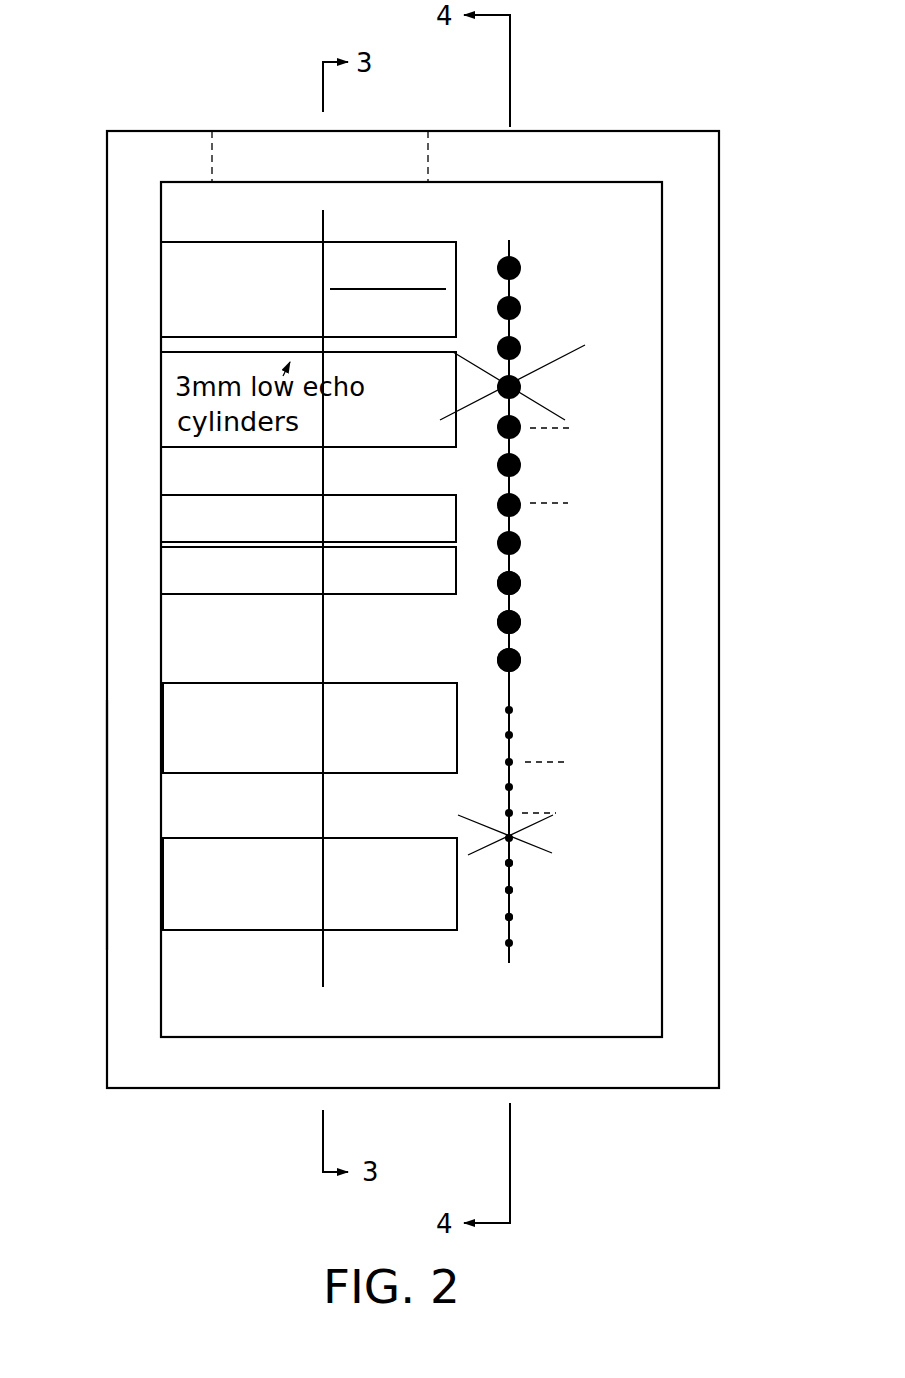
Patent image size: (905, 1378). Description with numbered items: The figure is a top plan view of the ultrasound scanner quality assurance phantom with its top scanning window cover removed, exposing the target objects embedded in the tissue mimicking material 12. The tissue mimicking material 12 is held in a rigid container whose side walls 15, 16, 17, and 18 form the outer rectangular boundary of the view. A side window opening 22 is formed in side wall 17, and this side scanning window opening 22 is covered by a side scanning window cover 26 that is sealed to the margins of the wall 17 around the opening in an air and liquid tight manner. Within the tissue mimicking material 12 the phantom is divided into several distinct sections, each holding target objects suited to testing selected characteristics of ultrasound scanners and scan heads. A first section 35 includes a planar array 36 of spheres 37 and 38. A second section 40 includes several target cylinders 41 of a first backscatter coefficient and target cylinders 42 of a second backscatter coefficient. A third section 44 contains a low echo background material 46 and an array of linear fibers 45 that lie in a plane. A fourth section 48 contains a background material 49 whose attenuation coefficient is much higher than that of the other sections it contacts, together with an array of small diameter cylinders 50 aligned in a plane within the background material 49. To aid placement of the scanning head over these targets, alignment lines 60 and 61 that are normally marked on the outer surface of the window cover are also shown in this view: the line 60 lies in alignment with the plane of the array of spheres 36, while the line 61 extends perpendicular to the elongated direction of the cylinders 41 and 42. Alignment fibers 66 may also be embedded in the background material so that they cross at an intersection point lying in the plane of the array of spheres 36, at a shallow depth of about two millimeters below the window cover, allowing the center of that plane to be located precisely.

The tissue mimicking material 12 is at (614, 974).
The side wall 15 is at (578, 1090).
The side wall 16 is at (107, 815).
The side wall 17 is at (607, 130).
The side wall 18 is at (719, 548).
The side window opening 22 is at (213, 148).
The side scanning window cover 26 is at (357, 182).
The first section 35 is at (594, 741).
The planar array of spheres 36 is at (572, 553).
The spheres 37 is at (521, 587).
The spheres 38 is at (516, 866).
The second section 40 is at (210, 970).
The target cylinders 41 is at (362, 931).
The target cylinders 42 is at (362, 682).
The third section 44 is at (143, 586).
The linear fibers 45 is at (162, 536).
The low echo background material 46 is at (400, 495).
The fourth section 48 is at (250, 286).
The background material 49 is at (226, 241).
The small diameter cylinders 50 is at (236, 307).
The alignment line 60 is at (510, 690).
The alignment line 61 is at (322, 632).
The alignment fibers 66 is at (558, 362).